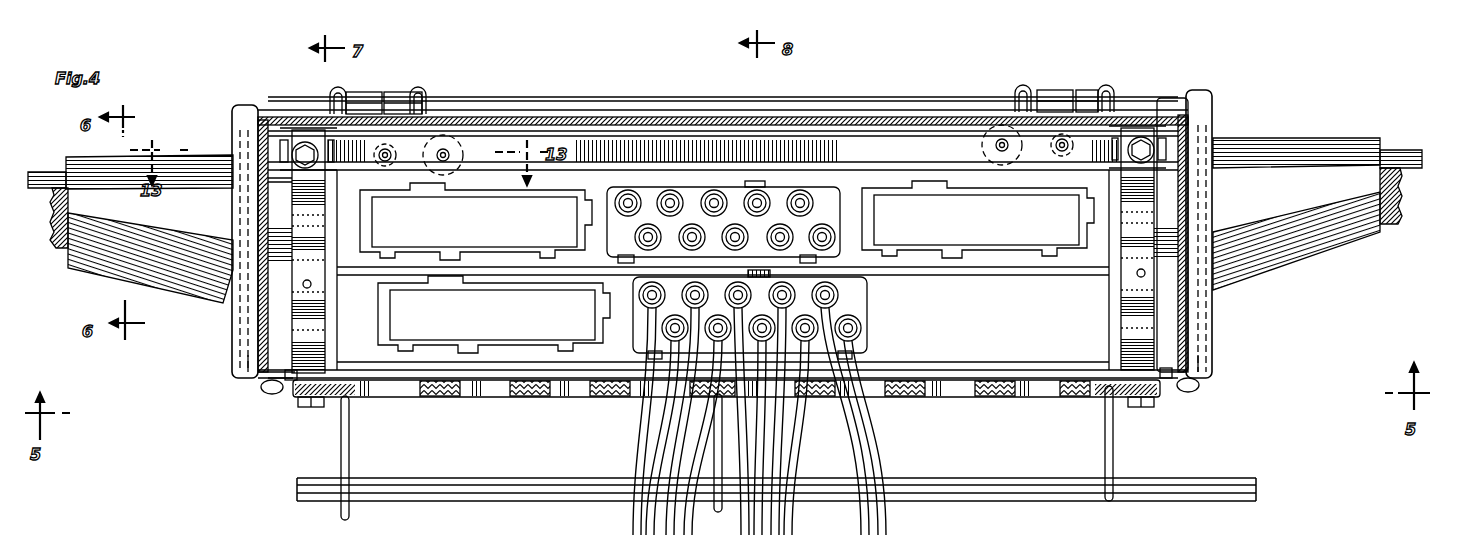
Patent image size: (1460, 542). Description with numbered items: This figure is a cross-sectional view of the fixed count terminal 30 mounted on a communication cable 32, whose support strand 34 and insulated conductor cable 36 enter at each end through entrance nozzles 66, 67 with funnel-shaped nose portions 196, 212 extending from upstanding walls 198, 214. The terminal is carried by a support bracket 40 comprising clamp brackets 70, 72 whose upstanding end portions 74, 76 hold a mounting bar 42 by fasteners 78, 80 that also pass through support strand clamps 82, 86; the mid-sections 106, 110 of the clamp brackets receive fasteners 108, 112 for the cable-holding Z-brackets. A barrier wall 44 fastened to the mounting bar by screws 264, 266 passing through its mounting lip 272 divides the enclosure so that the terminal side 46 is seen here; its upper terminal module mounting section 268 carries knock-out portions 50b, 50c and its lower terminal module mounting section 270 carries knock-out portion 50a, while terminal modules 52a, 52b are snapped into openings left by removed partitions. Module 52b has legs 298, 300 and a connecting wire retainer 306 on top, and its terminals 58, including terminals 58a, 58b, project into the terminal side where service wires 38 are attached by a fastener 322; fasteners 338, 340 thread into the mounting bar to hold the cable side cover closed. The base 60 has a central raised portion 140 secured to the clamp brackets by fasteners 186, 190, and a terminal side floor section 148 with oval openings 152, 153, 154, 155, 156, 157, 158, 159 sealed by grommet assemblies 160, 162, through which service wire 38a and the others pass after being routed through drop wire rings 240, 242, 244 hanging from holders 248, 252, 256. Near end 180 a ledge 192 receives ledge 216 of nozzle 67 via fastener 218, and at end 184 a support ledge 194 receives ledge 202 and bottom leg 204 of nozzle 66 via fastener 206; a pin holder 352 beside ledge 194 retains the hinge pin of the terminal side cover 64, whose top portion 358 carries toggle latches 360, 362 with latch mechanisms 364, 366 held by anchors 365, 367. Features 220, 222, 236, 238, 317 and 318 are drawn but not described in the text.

The fixed count terminal 30 is at (1290, 50).
The communication cable 32 is at (55, 172).
The support strand 34 is at (1398, 150).
The insulated conductor cable 36 is at (1392, 212).
The service wires 38 is at (888, 468).
The service wire 38a is at (632, 512).
The support bracket 40 is at (830, 140).
The mounting bar 42 is at (788, 140).
The barrier wall 44 is at (982, 310).
The terminal side 46 is at (718, 176).
The knock-out portion 50a is at (457, 321).
The knock-out portion 50b is at (455, 233).
The knock-out portion 50c is at (957, 225).
The terminal module 52a is at (693, 176).
The terminal module 52b is at (866, 319).
The terminals 58 is at (855, 299).
The terminal 58a is at (640, 292).
The terminal 58b is at (658, 312).
The base 60 is at (1165, 384).
The terminal side cover 64 is at (893, 110).
The entrance nozzle 66 is at (104, 271).
The entrance nozzle 67 is at (1350, 244).
The clamp bracket 70 is at (1143, 138).
The clamp bracket 72 is at (310, 133).
The upstanding end portion 74 is at (1137, 125).
The upstanding end portion 76 is at (318, 128).
The fastener 78 is at (1149, 138).
The fastener 80 is at (300, 150).
The support strand clamp 82 is at (1190, 105).
The support strand clamp 86 is at (280, 145).
The mid-section 106 is at (1150, 275).
The fastener 108 is at (1136, 274).
The mid-section 110 is at (300, 285).
The fastener 112 is at (322, 291).
The central raised portion 140 is at (945, 360).
The terminal side floor section 148 is at (1090, 380).
The oval shaped opening 152 is at (1020, 392).
The oval shaped opening 153 is at (930, 394).
The oval shaped opening 154 is at (830, 388).
The oval shaped opening 155 is at (740, 382).
The oval shaped opening 156 is at (648, 396).
The oval shaped opening 157 is at (562, 396).
The oval shaped opening 158 is at (463, 396).
The oval shaped opening 159 is at (375, 396).
The grommet assembly 160 is at (985, 397).
The grommet assembly 162 is at (527, 400).
The end of the base 180 is at (1125, 358).
The end of the base 184 is at (294, 388).
The fastener 186 is at (1142, 408).
The fastener 190 is at (310, 408).
The ledge 192 is at (1168, 390).
The support ledge 194 is at (292, 384).
The funnel-shaped nose portion 196 is at (160, 262).
The wall 198 is at (243, 211).
The ledge 202 is at (258, 360).
The bottom leg 204 is at (268, 375).
The fastener 206 is at (265, 390).
The funnel-shaped nose section 212 is at (1302, 255).
The wall portion 214 is at (1207, 205).
The ledge 216 is at (1210, 340).
The fastener 218 is at (1200, 380).
The end wall 220 is at (195, 157).
The cable layer 222 is at (1263, 140).
The cable end fitting 236 is at (68, 248).
The cable end fitting 238 is at (1385, 140).
The drop wire ring 240 is at (343, 520).
The drop wire ring 242 is at (718, 514).
The drop wire ring 244 is at (1110, 503).
The holder 248 is at (362, 396).
The holder 252 is at (716, 394).
The holder 256 is at (1105, 393).
The screw 264 is at (1062, 138).
The screw 266 is at (387, 148).
The upper terminal module mounting section 268 is at (913, 167).
The lower terminal module mounting section 270 is at (1075, 385).
The mounting lip 272 is at (580, 128).
The leg 298 is at (815, 268).
The leg 300 is at (705, 278).
The connecting wire retainer 306 is at (743, 273).
The tab 317 is at (855, 352).
The tab 318 is at (625, 352).
The fastener 322 is at (645, 277).
The fastener 338 is at (445, 148).
The fastener 340 is at (998, 138).
The pin holder 352 is at (302, 380).
The top portion 358 is at (597, 117).
The toggle latch 360 is at (338, 90).
The toggle latch 362 is at (1092, 72).
The latch mechanism 364 is at (420, 92).
The toggle latch anchor 365 is at (352, 92).
The toggle latch mechanism 366 is at (1023, 85).
The anchor 367 is at (1040, 80).